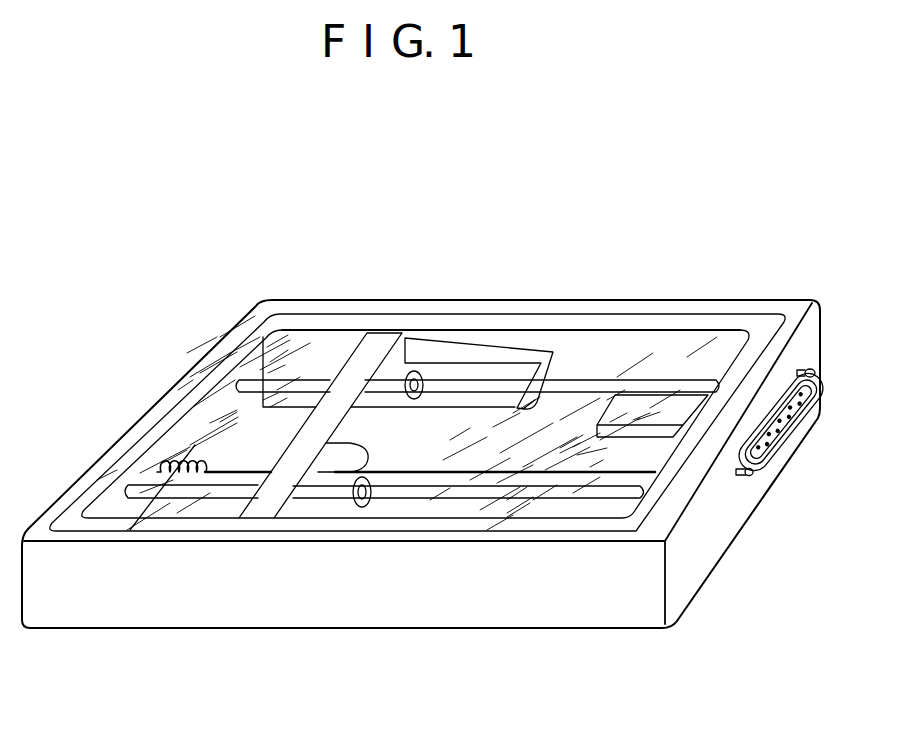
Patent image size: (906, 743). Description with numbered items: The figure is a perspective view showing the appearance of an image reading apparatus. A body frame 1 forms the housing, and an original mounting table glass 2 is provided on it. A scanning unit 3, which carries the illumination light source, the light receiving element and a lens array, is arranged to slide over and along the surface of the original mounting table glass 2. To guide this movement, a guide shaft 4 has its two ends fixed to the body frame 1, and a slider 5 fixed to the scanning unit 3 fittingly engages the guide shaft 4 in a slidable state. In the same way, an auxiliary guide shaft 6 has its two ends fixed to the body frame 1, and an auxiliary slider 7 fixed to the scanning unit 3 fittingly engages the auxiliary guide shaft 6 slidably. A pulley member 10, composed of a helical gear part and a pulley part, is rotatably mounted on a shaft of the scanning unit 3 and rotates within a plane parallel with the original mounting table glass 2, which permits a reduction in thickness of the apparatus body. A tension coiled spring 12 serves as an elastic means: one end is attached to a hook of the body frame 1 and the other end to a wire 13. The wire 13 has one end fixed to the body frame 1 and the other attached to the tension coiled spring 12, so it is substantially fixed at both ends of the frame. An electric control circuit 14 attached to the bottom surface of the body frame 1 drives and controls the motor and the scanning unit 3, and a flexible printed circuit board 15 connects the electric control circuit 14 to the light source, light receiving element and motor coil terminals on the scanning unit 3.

The body frame 1 is at (628, 613).
The original mounting table glass 2 is at (686, 357).
The scanning unit 3 is at (358, 358).
The guide shaft 4 is at (543, 480).
The slider 5 is at (328, 498).
The auxiliary guide shaft 6 is at (600, 382).
The auxiliary slider 7 is at (405, 372).
The pulley member 10 is at (367, 452).
The tension coiled spring 12 is at (187, 462).
The wire 13 is at (448, 480).
The electric control circuit 14 is at (667, 403).
The flexible printed circuit board 15 is at (517, 352).